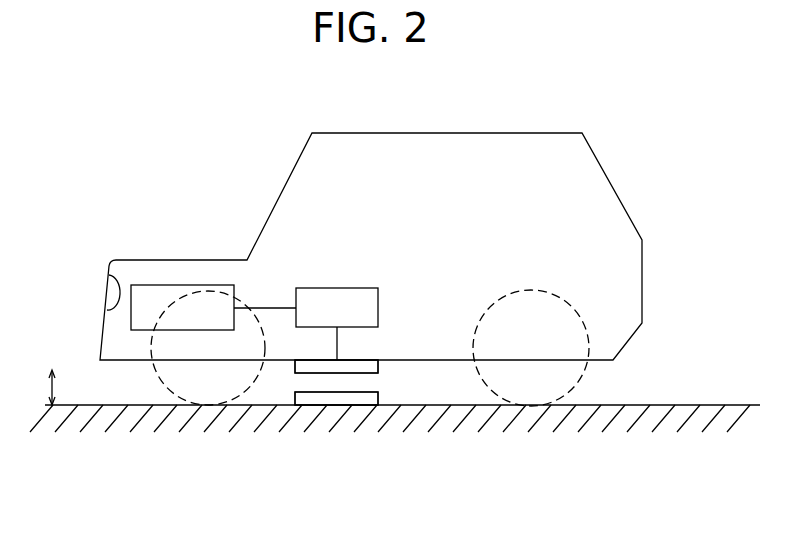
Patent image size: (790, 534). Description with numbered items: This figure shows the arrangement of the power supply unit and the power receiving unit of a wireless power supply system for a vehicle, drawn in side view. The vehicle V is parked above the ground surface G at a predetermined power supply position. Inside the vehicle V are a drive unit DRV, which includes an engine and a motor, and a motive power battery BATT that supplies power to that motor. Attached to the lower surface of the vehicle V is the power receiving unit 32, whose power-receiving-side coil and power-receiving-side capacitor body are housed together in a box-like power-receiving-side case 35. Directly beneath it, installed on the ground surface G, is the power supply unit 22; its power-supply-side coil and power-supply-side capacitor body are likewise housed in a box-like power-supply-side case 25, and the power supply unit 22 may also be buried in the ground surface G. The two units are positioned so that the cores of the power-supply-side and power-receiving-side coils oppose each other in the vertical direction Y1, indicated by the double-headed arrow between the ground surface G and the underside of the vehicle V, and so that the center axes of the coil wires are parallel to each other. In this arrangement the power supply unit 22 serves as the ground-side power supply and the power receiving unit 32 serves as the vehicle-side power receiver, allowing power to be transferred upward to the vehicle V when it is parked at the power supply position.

The vehicle V is at (558, 133).
The drive unit DRV is at (163, 285).
The motive power battery BATT is at (335, 288).
The power-receiving-side case 35 is at (370, 361).
The power receiving unit 32 is at (378, 367).
The power supply unit 22 is at (378, 398).
The power-supply-side case 25 is at (324, 398).
The ground surface G is at (703, 405).
The vertical direction Y1 is at (52, 382).